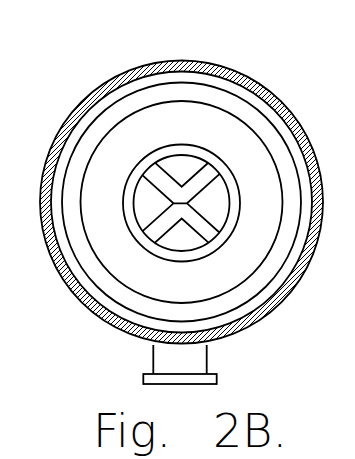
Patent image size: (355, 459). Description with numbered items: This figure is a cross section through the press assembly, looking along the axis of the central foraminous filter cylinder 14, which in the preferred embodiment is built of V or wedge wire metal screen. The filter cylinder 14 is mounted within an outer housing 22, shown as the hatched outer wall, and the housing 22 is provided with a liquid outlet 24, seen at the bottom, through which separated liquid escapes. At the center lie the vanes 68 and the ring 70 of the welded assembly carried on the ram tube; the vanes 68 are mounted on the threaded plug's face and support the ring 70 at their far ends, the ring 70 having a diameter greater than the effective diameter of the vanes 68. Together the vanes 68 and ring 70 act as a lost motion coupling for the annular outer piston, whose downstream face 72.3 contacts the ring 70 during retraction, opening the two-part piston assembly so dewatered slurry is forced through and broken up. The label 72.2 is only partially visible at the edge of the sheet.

The filter cylinder 14 is at (139, 102).
The outer housing 22 is at (68, 288).
The liquid outlet 24 is at (207, 358).
The vanes 68 is at (194, 185).
The ring 70 is at (211, 157).
The layer 72.2 is at (14, 94).
The downstream face 72.3 is at (162, 123).